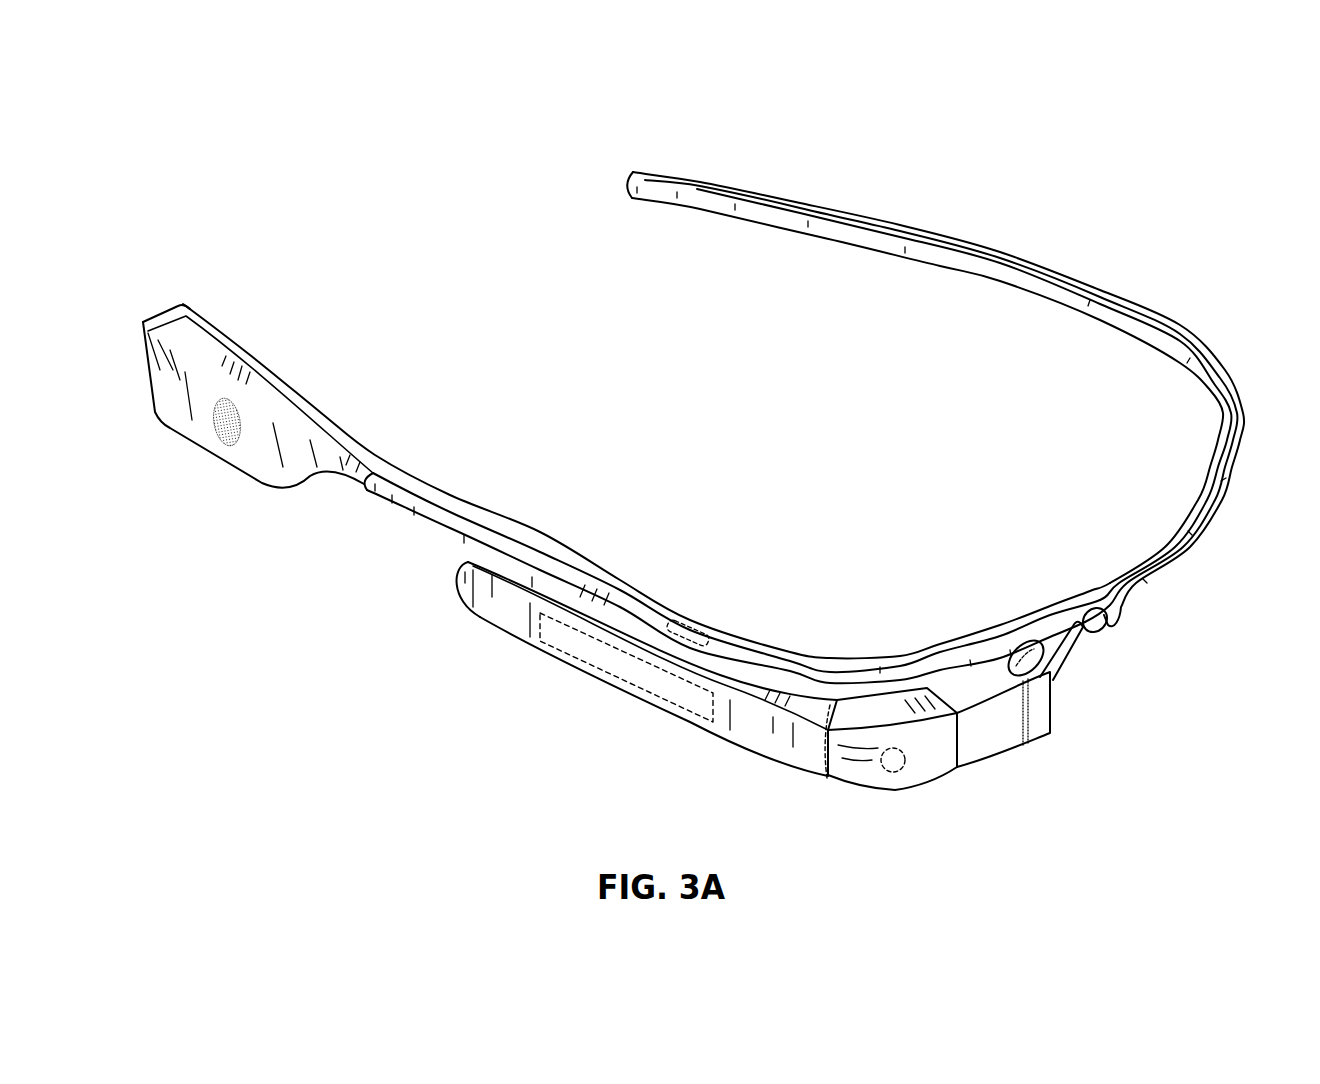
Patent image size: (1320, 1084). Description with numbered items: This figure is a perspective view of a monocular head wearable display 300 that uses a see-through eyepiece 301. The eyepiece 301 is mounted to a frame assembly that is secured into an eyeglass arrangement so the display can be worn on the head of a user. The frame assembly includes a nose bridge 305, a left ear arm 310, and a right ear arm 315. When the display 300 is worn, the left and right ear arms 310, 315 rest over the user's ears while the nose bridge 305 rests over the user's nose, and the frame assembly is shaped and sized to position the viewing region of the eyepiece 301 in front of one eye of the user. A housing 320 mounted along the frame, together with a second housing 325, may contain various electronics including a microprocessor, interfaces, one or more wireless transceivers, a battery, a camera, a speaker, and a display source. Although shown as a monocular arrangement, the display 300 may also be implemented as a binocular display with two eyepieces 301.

The monocular head wearable display 300 is at (1124, 108).
The eyepiece 301 is at (1026, 777).
The nose bridge 305 is at (1137, 667).
The left ear arm 310 is at (937, 240).
The right ear arm 315 is at (525, 546).
The housing 320 is at (740, 737).
The display 325 is at (267, 472).